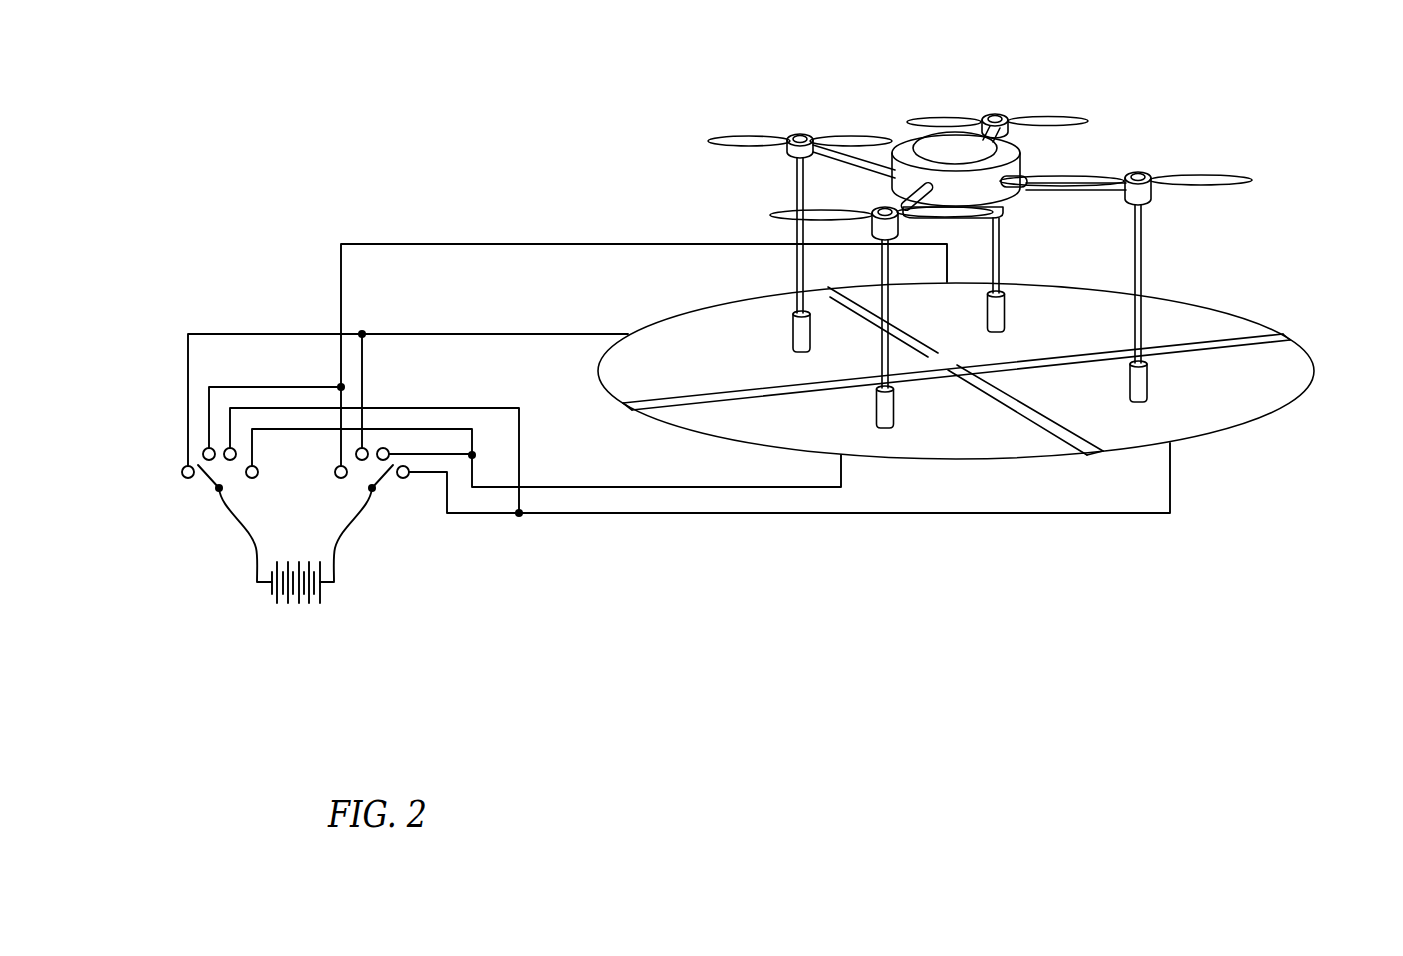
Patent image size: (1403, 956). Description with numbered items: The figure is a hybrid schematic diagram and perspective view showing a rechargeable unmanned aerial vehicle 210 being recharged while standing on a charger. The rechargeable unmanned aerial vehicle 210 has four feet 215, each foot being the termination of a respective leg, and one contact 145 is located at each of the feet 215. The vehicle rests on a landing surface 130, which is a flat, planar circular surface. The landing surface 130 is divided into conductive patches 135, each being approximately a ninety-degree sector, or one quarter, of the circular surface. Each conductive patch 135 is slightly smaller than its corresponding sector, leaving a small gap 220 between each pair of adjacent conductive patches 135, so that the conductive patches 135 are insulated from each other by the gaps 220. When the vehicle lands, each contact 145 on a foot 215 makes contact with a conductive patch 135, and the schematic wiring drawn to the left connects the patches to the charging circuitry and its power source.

The rechargeable unmanned aerial vehicle 210 is at (980, 249).
The landing surface 130 is at (970, 374).
The conductive patches 135 is at (703, 314).
The gap 220 is at (630, 408).
The contact 145 is at (880, 430).
The feet 215 is at (1147, 368).